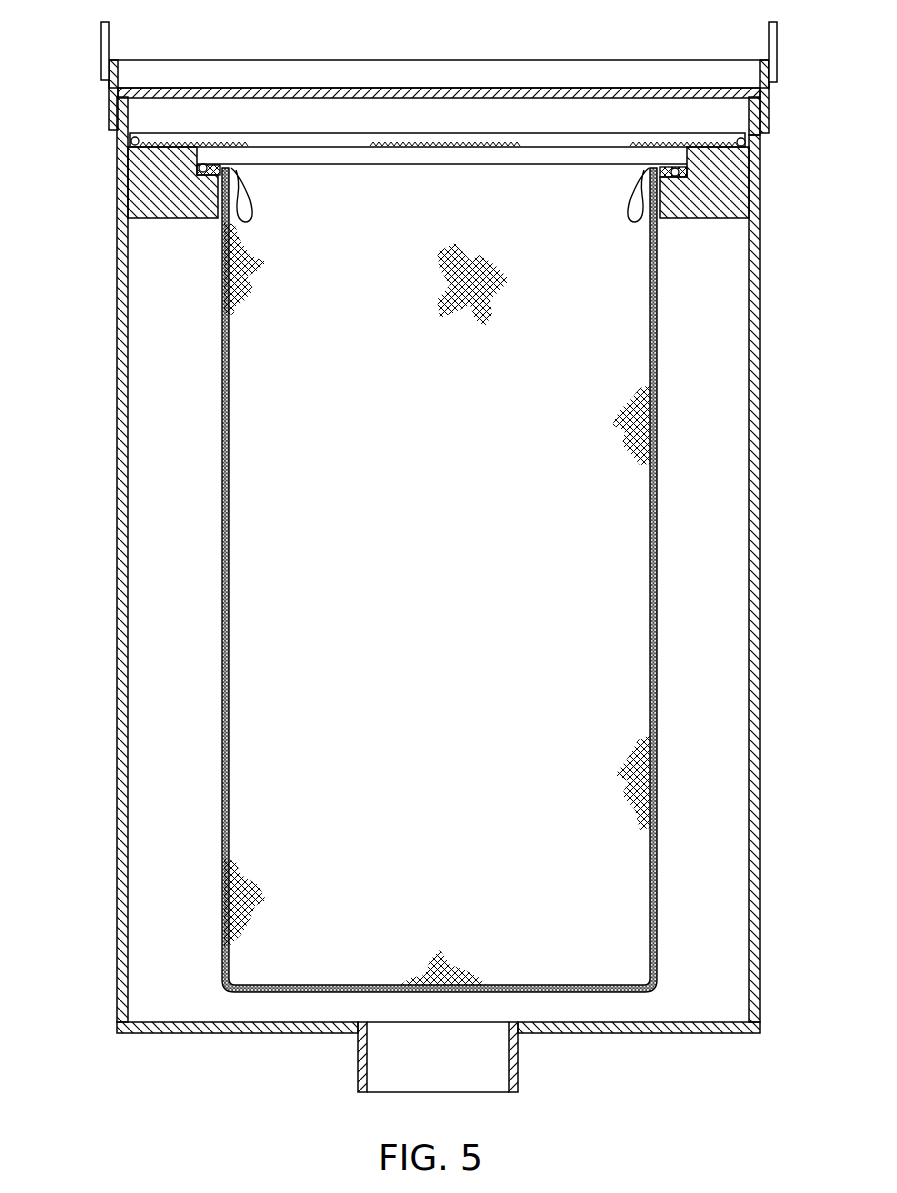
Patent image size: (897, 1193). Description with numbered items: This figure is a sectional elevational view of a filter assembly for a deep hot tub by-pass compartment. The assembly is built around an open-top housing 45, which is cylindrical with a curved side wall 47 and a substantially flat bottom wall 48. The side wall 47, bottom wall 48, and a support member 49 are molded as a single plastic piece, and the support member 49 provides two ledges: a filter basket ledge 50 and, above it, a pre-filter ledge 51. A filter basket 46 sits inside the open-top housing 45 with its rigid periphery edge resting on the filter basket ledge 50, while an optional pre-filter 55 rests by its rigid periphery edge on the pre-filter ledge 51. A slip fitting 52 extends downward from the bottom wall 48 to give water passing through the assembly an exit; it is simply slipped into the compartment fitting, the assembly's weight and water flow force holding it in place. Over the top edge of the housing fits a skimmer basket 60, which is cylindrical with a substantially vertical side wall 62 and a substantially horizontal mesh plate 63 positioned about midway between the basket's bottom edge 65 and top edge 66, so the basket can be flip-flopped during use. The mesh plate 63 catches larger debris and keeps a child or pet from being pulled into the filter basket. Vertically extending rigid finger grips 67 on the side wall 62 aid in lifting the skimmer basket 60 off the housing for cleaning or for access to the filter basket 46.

The open-top housing 45 is at (389, 587).
The filter basket 46 is at (219, 877).
The side wall 47 is at (116, 937).
The bottom wall 48 is at (200, 1034).
The support member 49 is at (135, 183).
The filter basket ledge 50 is at (200, 180).
The pre-filter ledge 51 is at (134, 150).
The slip fitting 52 is at (519, 1058).
The pre-filter 55 is at (570, 129).
The skimmer basket 60 is at (485, 98).
The side wall 62 is at (119, 72).
The mesh plate 63 is at (612, 88).
The bottom edge 65 is at (766, 136).
The top edge 66 is at (764, 61).
The finger grips 67 is at (101, 52).